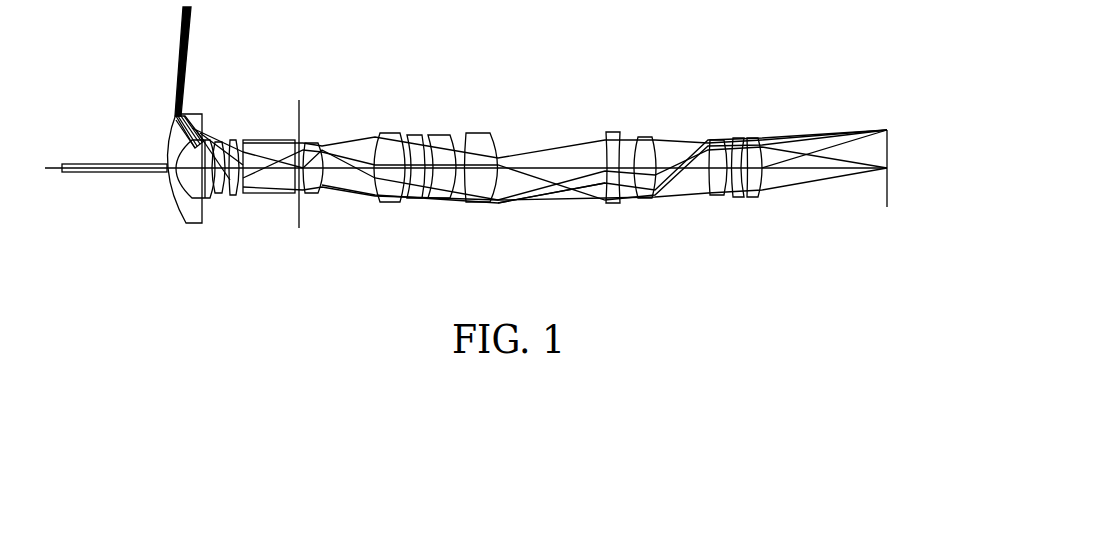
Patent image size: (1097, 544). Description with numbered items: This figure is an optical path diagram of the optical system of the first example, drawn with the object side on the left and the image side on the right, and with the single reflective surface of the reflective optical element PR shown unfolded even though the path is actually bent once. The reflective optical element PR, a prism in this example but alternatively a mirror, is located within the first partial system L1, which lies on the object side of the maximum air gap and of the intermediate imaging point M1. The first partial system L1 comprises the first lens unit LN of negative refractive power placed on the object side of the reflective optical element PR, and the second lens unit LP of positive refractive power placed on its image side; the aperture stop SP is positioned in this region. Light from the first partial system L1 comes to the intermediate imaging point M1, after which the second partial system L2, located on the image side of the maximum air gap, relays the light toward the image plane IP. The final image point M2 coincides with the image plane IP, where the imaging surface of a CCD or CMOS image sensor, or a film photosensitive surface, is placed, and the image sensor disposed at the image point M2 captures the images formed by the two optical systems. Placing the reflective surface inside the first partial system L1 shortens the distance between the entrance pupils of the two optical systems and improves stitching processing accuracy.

The first partial system L1 is at (358, 145).
The first lens unit LN is at (201, 138).
The second lens unit LP is at (429, 162).
The reflective optical element PR is at (268, 195).
The aperture stop SP is at (302, 222).
The intermediate imaging point M1 is at (480, 200).
The second partial system L2 is at (678, 112).
The image plane IP is at (887, 206).
The image point M2 is at (887, 130).